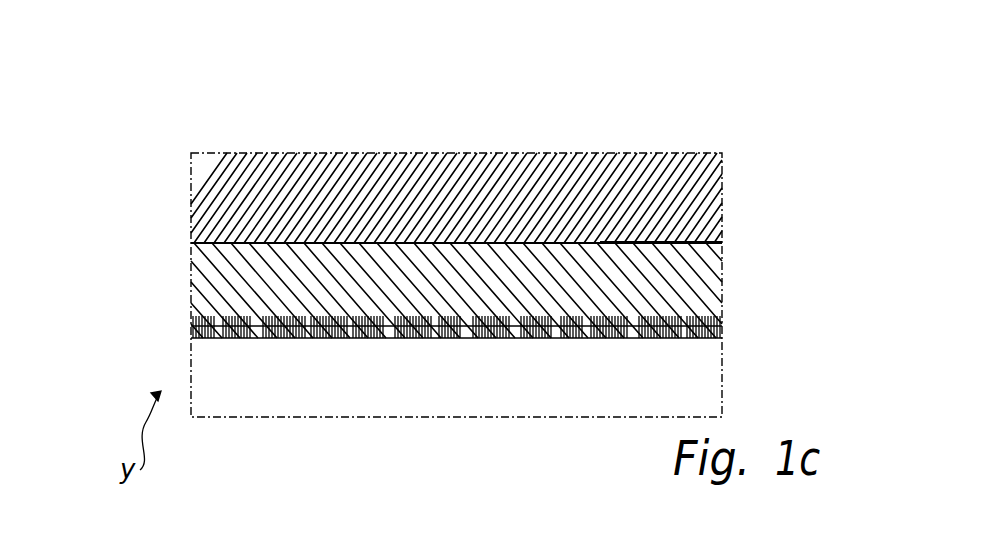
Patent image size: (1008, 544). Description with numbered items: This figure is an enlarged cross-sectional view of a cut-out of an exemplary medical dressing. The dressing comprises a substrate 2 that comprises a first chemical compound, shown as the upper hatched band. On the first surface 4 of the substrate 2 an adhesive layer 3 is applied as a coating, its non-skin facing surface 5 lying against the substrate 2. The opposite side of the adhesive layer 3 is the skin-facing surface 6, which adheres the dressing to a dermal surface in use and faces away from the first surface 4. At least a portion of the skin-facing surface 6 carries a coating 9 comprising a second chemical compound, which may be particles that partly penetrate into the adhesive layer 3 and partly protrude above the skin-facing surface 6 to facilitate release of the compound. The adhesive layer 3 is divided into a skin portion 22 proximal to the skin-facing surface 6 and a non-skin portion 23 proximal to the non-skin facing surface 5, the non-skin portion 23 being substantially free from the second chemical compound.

The substrate 2 is at (605, 180).
The adhesive layer 3 is at (272, 295).
The first surface 4 is at (700, 243).
The non-skin facing surface 5 is at (672, 238).
The skin-facing surface 6 is at (668, 330).
The coating 9 is at (700, 313).
The skin portion 22 is at (180, 313).
The non-skin portion 23 is at (180, 243).